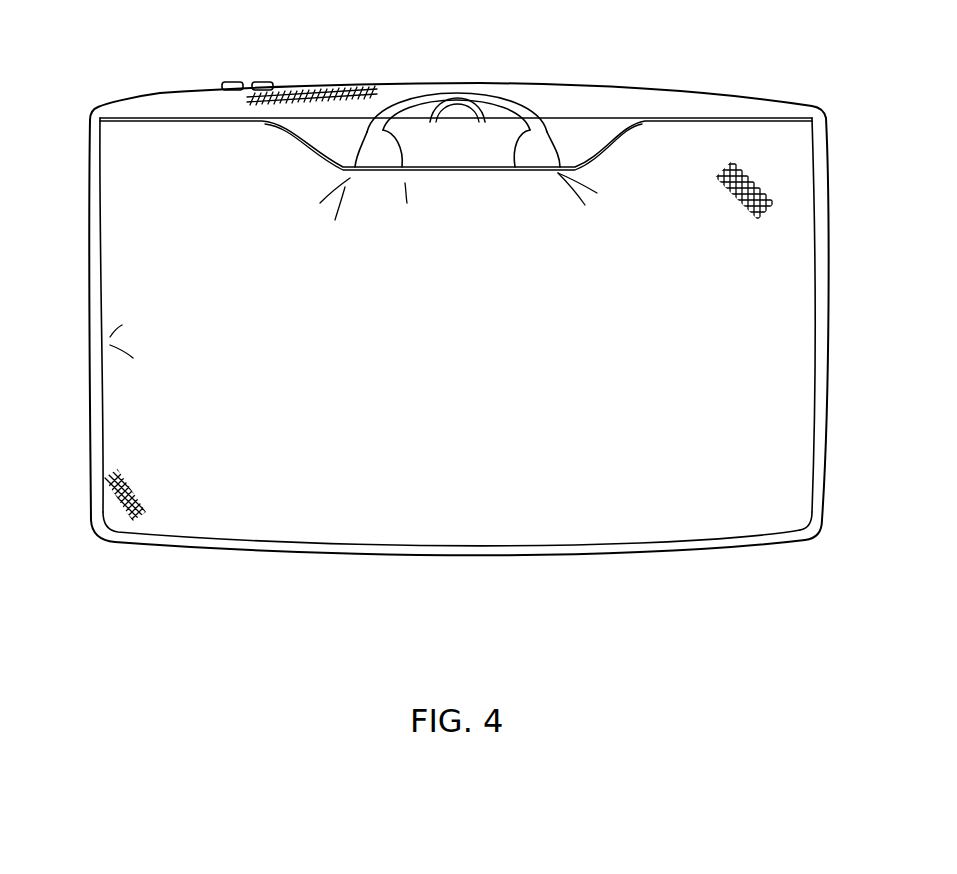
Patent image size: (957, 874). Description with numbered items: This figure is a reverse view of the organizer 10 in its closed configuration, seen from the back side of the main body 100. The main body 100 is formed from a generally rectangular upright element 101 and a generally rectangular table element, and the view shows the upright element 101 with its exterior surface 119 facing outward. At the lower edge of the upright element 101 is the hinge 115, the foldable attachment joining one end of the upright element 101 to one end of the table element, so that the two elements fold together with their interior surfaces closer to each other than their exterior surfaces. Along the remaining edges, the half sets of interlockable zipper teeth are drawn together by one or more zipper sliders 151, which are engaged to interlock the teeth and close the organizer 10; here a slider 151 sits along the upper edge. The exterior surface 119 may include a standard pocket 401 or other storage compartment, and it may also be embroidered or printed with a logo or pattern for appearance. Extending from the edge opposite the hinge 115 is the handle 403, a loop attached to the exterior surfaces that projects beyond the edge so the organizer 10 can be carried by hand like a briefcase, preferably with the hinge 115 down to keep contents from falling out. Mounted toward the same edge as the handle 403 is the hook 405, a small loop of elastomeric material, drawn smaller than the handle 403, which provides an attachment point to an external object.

The organizer 10 is at (764, 68).
The main body 100 is at (830, 280).
The upright element 101 is at (115, 302).
The hinge 115 is at (770, 543).
The exterior surface 119 is at (385, 532).
The zipper slider 151 is at (265, 82).
The pocket 401 is at (598, 344).
The handle 403 is at (500, 93).
The hook 405 is at (428, 107).